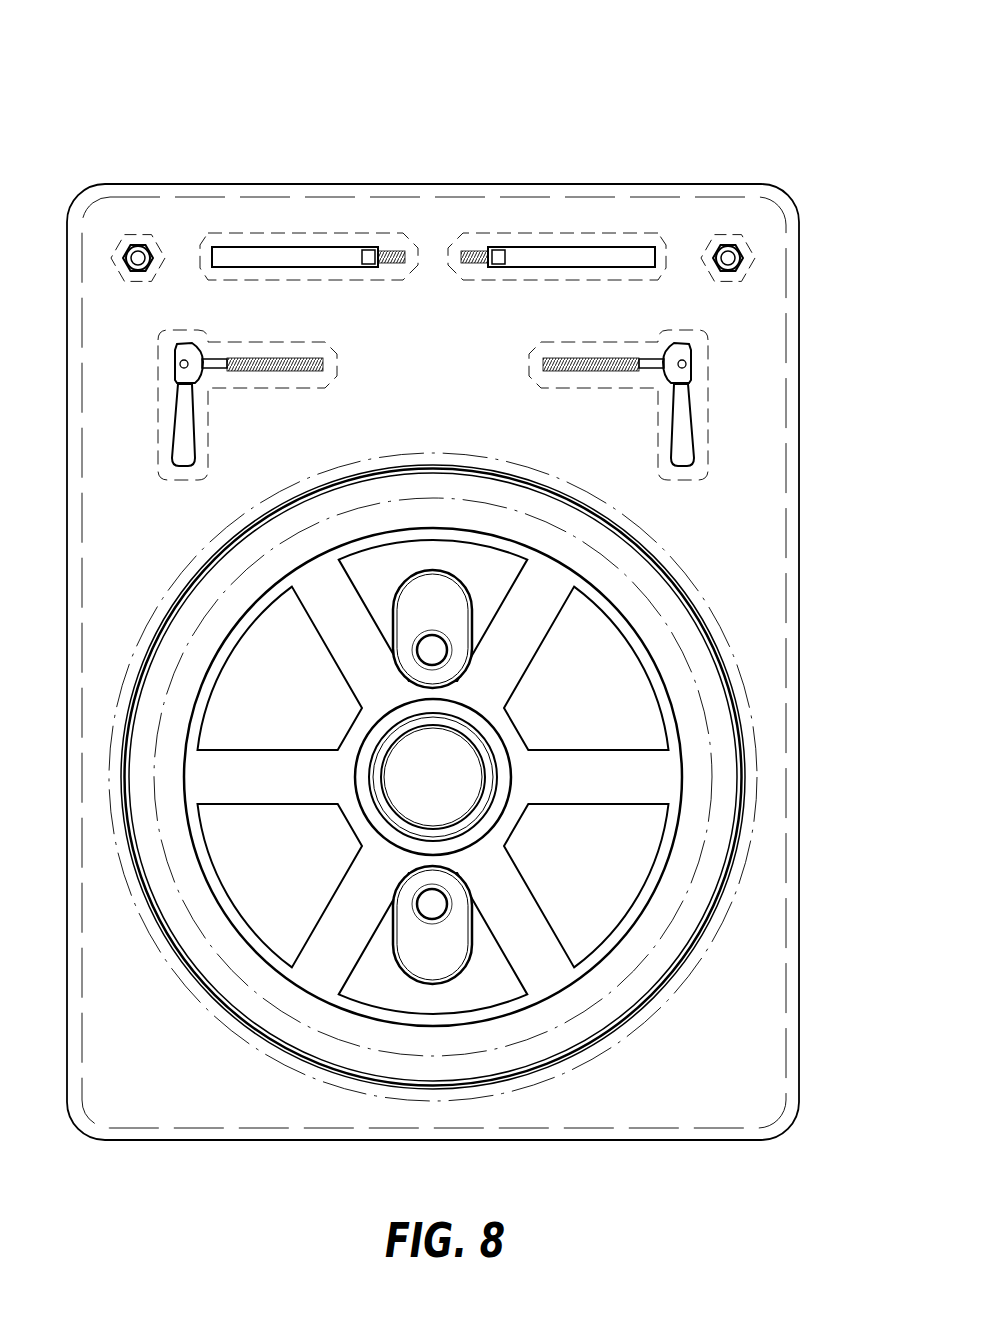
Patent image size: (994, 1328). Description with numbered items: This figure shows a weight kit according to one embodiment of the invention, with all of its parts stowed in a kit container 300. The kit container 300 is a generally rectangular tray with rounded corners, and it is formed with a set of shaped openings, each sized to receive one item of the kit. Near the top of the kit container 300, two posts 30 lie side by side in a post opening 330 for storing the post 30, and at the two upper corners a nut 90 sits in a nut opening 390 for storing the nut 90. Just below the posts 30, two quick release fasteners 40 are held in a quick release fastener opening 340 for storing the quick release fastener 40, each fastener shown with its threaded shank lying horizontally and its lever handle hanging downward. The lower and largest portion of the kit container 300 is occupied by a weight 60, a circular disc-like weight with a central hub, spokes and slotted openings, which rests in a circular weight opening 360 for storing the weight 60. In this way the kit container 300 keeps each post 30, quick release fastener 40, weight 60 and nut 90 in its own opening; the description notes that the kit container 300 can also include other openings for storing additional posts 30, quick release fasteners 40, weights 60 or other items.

The kit container 300 is at (675, 56).
The post 30 is at (300, 247).
The quick release fastener 40 is at (203, 345).
The weight 60 is at (280, 558).
The nut 90 is at (124, 246).
The post opening 330 is at (248, 232).
The quick release fastener opening 340 is at (172, 340).
The weight opening 360 is at (163, 598).
The nut opening 390 is at (157, 240).